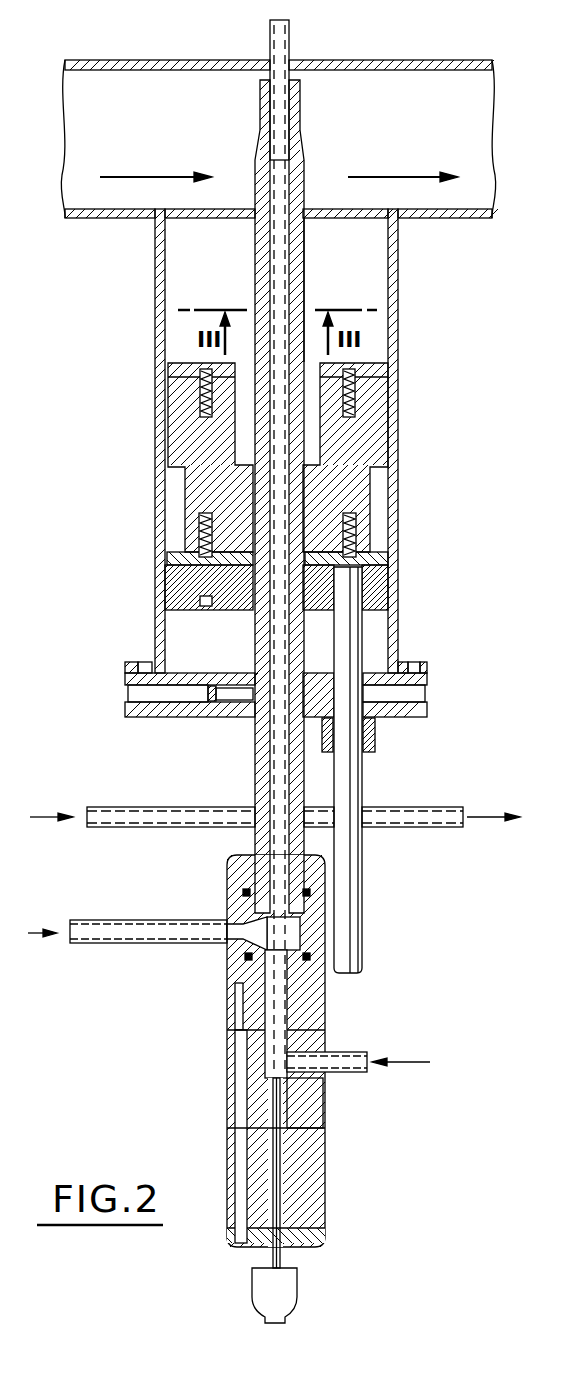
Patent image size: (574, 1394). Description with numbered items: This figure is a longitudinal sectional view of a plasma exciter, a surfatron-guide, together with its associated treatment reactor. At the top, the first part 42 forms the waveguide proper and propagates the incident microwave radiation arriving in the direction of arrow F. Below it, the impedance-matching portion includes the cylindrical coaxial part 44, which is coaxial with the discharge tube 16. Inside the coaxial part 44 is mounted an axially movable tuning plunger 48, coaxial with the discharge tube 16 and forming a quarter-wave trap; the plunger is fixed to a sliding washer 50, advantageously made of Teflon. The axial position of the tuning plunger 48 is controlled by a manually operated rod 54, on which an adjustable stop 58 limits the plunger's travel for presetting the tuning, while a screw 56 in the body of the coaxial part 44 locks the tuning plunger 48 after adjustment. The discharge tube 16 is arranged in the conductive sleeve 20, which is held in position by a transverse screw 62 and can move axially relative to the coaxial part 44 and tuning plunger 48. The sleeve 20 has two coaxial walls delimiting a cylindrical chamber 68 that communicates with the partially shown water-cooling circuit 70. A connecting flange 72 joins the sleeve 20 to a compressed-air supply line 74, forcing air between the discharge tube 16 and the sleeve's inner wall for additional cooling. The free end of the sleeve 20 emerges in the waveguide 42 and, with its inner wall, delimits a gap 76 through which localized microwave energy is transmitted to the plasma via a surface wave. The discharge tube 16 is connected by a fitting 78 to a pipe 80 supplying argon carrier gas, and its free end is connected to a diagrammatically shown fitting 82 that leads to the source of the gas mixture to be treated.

The first part 42 is at (155, 60).
The gap 76 is at (255, 72).
The discharge tube 16 is at (280, 248).
The cylindrical chamber 68 is at (298, 281).
The sleeve 20 is at (325, 292).
The coaxial part 44 is at (155, 312).
The tuning plunger 48 is at (208, 440).
The sliding washer 50 is at (185, 590).
The transverse screw 62 is at (133, 690).
The screw 56 is at (417, 697).
The adjustable stop 58 is at (375, 723).
The rod 54 is at (352, 795).
The water-cooling circuit 70 is at (215, 805).
The compressed-air supply line 74 is at (125, 920).
The connecting flange 72 is at (227, 983).
The pipe 80 is at (350, 1050).
The fitting 78 is at (306, 1082).
The fitting 82 is at (290, 1283).